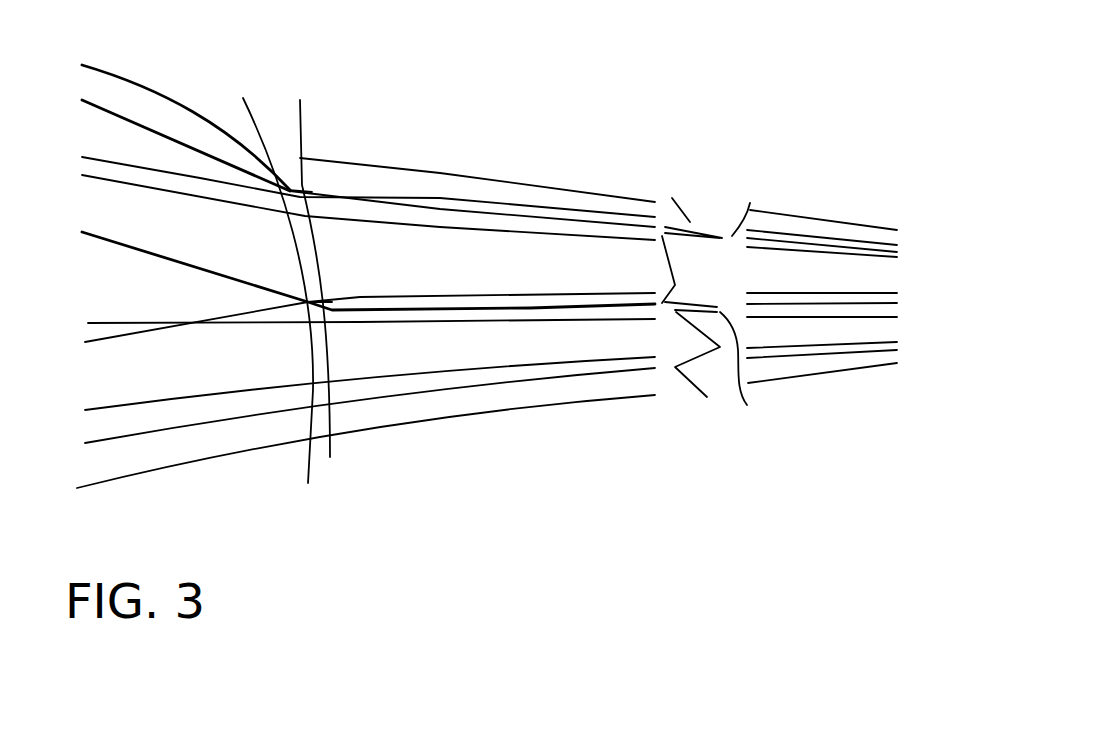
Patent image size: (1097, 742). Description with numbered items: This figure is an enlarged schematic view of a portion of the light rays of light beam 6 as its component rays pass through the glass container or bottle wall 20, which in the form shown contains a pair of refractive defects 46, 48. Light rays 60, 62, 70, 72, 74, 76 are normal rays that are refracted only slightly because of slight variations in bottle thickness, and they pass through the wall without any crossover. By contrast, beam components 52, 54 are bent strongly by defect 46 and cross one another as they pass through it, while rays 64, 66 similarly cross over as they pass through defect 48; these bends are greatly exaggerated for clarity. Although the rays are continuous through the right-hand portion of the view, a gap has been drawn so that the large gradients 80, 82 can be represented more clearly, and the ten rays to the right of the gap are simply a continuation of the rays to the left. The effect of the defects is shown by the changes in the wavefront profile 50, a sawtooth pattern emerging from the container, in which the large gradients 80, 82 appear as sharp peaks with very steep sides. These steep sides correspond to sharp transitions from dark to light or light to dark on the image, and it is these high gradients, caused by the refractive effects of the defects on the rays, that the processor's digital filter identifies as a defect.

The light beam 6 is at (145, 91).
The bottle wall 20 is at (282, 114).
The refractive defect 46 is at (312, 190).
The refractive defect 48 is at (330, 302).
The wavefront profile 50 is at (698, 217).
The beam component 52 is at (145, 129).
The beam component 54 is at (152, 171).
The light ray 60 is at (197, 117).
The light ray 62 is at (239, 205).
The light ray 64 is at (150, 259).
The light ray 66 is at (227, 313).
The light ray 70 is at (255, 323).
The light ray 72 is at (142, 403).
The light ray 74 is at (155, 432).
The light ray 76 is at (210, 463).
The large gradient 80 is at (750, 203).
The large gradient 82 is at (747, 405).